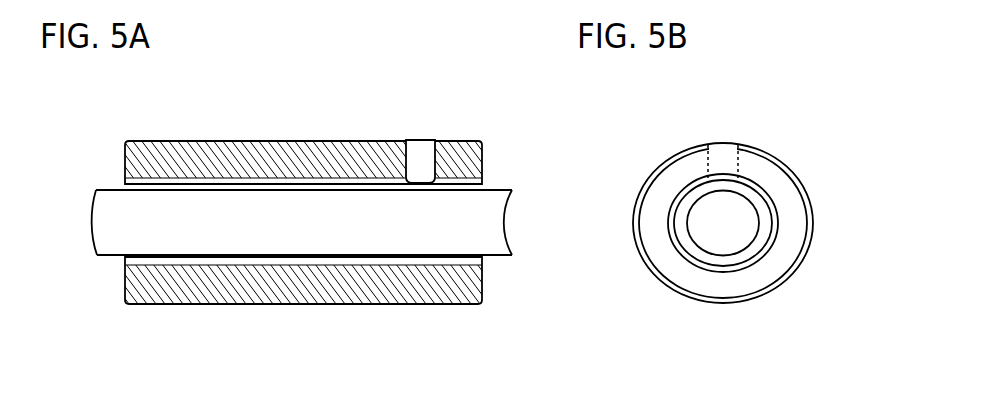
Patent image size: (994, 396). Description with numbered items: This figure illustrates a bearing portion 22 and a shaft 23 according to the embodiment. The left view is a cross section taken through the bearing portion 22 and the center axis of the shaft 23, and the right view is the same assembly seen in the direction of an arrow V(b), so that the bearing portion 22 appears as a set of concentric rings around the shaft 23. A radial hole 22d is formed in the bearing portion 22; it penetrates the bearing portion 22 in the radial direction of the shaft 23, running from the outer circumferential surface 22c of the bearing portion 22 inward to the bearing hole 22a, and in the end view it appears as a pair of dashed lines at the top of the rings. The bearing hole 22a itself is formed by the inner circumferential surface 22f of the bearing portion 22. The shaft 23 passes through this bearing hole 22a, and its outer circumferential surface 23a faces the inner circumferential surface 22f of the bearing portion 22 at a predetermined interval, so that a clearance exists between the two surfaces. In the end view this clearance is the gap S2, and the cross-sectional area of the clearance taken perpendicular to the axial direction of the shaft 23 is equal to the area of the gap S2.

In FIG. 5A, the bearing portion 22 is at (303, 213).
In FIG. 5B, the bearing portion 22 is at (744, 224).
In FIG. 5A, the outer circumferential surface 22c is at (322, 141).
In FIG. 5B, the outer circumferential surface 22c is at (810, 136).
In FIG. 5A, the radial hole 22d is at (427, 146).
In FIG. 5B, the radial hole 22d is at (737, 153).
In FIG. 5A, the bearing hole 22a is at (303, 265).
In FIG. 5B, the bearing hole 22a is at (727, 276).
In FIG. 5A, the inner circumferential surface 22f is at (417, 258).
In FIG. 5B, the inner circumferential surface 22f is at (753, 278).
In FIG. 5A, the shaft 23 is at (297, 271).
In FIG. 5A, the outer circumferential surface 23a is at (104, 258).
In FIG. 5A, the arrow V is at (558, 225).
In FIG. 5A, the direction b is at (522, 222).
In FIG. 5B, the gap S2 is at (765, 224).